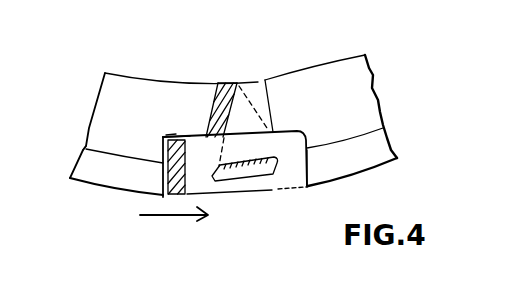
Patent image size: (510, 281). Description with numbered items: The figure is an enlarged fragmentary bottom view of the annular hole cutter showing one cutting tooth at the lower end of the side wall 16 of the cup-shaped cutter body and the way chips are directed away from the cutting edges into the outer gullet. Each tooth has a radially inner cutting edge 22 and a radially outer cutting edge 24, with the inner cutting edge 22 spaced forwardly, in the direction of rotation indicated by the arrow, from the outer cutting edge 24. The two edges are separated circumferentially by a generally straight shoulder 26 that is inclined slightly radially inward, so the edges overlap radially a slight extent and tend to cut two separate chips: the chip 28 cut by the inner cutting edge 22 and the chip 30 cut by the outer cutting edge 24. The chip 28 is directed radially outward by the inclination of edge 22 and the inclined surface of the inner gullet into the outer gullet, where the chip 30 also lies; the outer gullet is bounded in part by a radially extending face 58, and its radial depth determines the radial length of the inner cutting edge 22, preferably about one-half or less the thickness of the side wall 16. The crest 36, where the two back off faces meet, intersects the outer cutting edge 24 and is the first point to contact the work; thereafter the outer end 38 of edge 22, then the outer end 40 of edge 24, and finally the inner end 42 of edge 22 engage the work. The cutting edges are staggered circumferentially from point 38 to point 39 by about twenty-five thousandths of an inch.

The side wall 16 is at (327, 66).
The radially inner cutting edge 22 is at (213, 102).
The radially outer cutting edge 24 is at (162, 172).
The shoulder 26 is at (175, 133).
The chip 28 is at (238, 83).
The chip 30 is at (188, 195).
The crest 36 is at (87, 152).
The outer end of cutting edge 22 38 is at (203, 135).
The point 39 is at (163, 137).
The outer end of cutting edge 24 40 is at (163, 192).
The inner end of cutting edge 22 42 is at (220, 83).
The radially extending face 58 is at (308, 170).